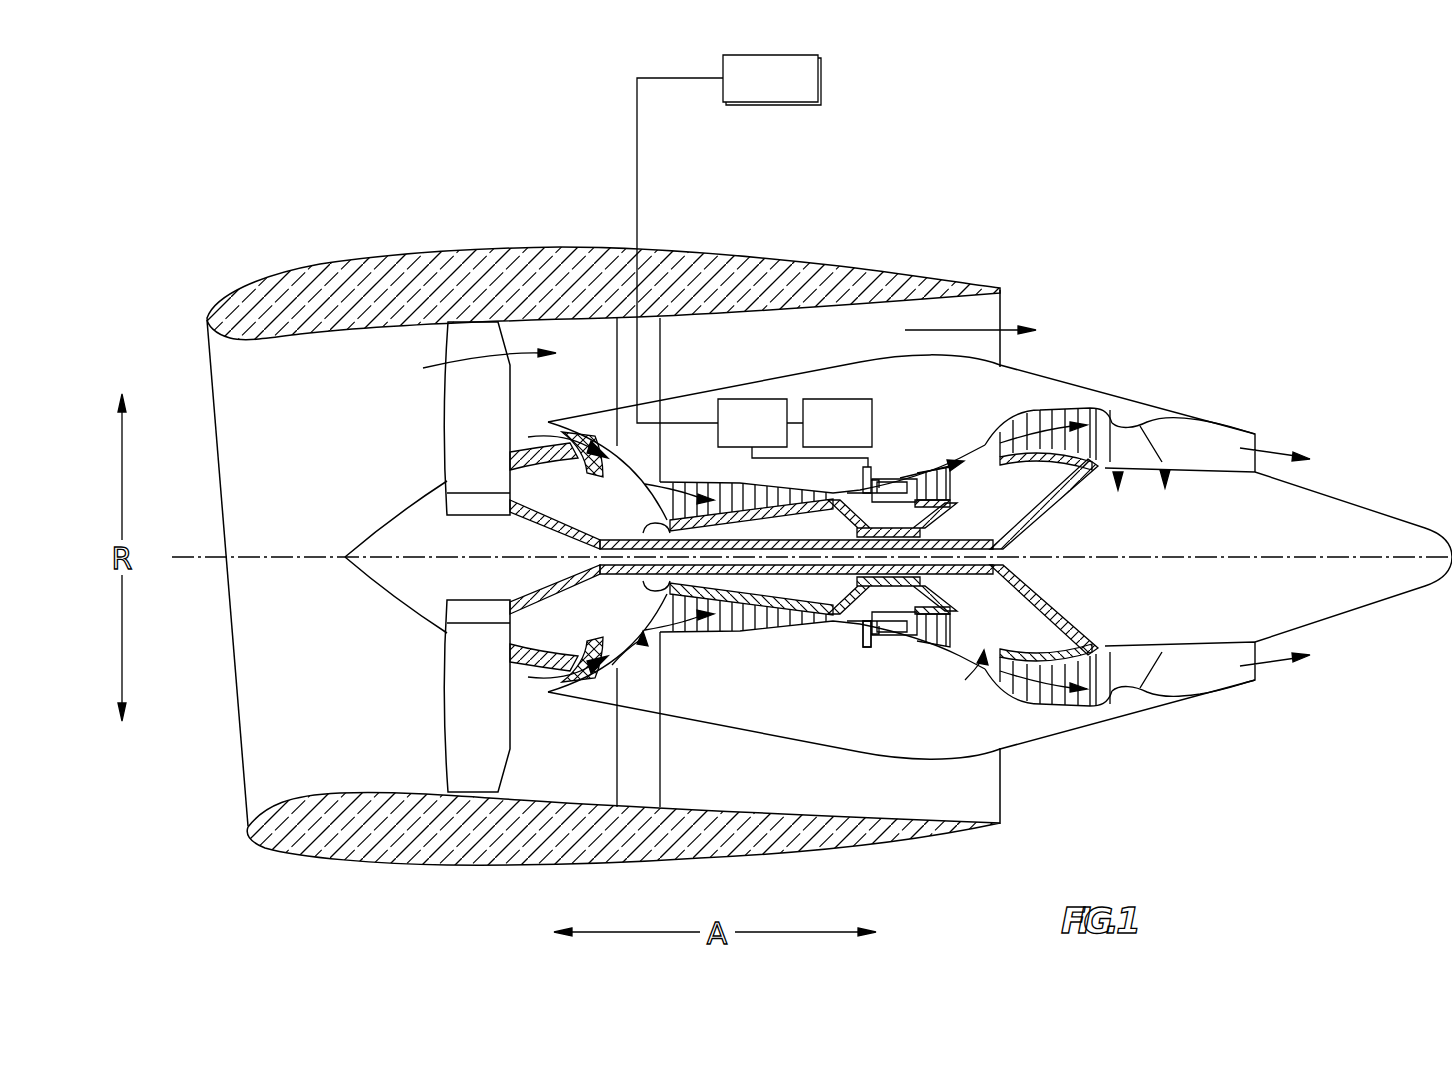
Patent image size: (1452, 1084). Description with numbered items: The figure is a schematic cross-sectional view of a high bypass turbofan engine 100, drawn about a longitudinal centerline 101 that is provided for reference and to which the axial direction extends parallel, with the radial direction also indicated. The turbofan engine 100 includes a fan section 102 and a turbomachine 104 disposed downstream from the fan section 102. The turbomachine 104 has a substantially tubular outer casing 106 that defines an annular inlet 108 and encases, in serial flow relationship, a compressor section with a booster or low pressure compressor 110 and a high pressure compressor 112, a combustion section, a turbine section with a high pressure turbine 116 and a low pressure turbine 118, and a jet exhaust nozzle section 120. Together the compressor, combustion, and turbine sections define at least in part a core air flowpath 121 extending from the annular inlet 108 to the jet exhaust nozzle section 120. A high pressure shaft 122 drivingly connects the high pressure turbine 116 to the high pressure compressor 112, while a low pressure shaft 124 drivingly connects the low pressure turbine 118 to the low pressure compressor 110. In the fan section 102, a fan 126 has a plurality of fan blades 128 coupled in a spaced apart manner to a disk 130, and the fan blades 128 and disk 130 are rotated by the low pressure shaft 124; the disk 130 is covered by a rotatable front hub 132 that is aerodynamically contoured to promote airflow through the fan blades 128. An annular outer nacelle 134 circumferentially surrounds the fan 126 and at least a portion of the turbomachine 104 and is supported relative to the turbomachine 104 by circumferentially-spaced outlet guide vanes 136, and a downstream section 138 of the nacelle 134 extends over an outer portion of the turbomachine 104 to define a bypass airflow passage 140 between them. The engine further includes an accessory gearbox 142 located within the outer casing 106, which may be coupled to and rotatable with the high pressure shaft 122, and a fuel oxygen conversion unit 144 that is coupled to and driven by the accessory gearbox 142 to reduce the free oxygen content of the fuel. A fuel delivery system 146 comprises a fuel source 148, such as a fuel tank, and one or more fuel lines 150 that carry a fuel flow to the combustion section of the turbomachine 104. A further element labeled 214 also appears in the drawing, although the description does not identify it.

The turbofan engine 100 is at (1161, 243).
The longitudinal centerline 101 is at (1222, 556).
The fan section 102 is at (396, 325).
The turbomachine 104 is at (784, 340).
The outer casing 106 is at (847, 752).
The annular inlet 108 is at (552, 671).
The low pressure compressor 110 is at (595, 687).
The high pressure compressor 112 is at (700, 634).
The high pressure turbine 116 is at (965, 637).
The low pressure turbine 118 is at (1087, 712).
The jet exhaust nozzle section 120 is at (1157, 694).
The core air flowpath 121 is at (645, 650).
The high pressure shaft 122 is at (890, 478).
The low pressure shaft 124 is at (953, 539).
The fan 126 is at (380, 412).
The fan blades 128 is at (445, 727).
The disk 130 is at (463, 505).
The front hub 132 is at (357, 578).
The outer nacelle 134 is at (500, 867).
The outlet guide vanes 136 is at (660, 344).
The downstream section of the nacelle 138 is at (913, 268).
The bypass airflow passage 140 is at (942, 325).
The accessory gearbox 142 is at (837, 423).
The fuel oxygen conversion unit 144 is at (793, 433).
The fuel delivery system 146 is at (545, 100).
The fuel source 148 is at (772, 80).
The fuel lines 150 is at (637, 198).
The sensor 214 is at (878, 640).